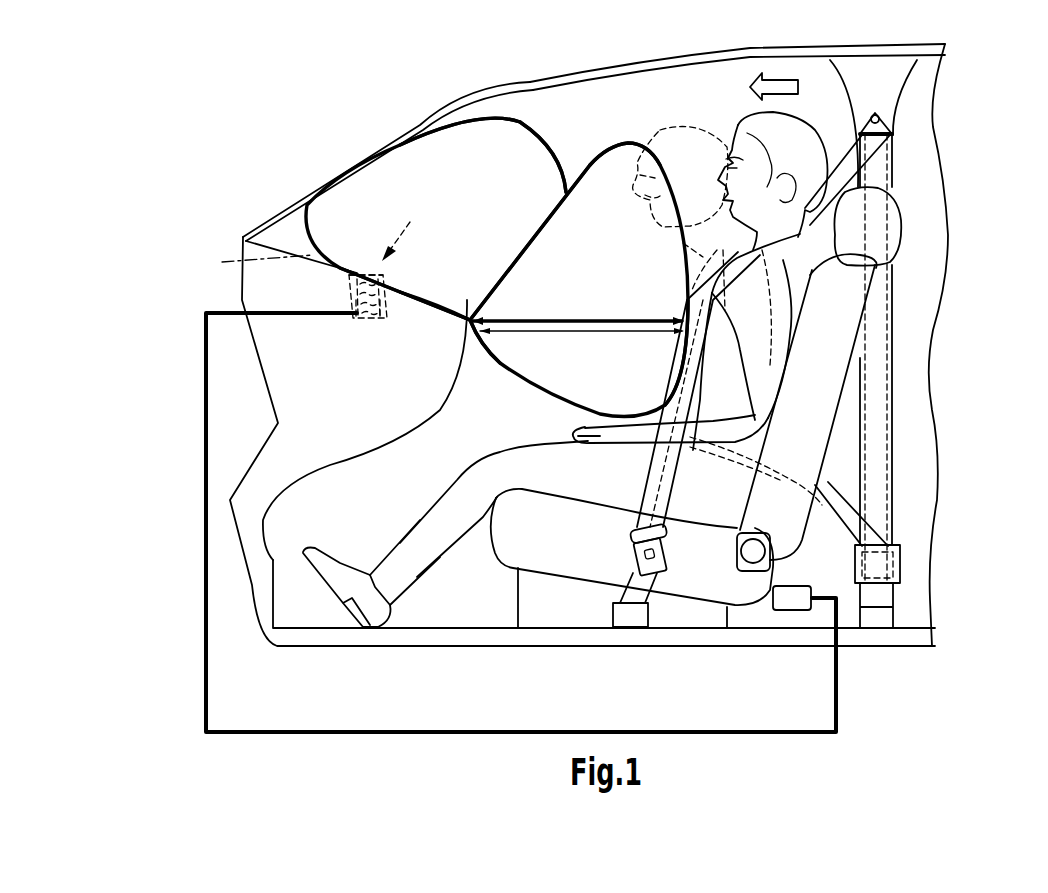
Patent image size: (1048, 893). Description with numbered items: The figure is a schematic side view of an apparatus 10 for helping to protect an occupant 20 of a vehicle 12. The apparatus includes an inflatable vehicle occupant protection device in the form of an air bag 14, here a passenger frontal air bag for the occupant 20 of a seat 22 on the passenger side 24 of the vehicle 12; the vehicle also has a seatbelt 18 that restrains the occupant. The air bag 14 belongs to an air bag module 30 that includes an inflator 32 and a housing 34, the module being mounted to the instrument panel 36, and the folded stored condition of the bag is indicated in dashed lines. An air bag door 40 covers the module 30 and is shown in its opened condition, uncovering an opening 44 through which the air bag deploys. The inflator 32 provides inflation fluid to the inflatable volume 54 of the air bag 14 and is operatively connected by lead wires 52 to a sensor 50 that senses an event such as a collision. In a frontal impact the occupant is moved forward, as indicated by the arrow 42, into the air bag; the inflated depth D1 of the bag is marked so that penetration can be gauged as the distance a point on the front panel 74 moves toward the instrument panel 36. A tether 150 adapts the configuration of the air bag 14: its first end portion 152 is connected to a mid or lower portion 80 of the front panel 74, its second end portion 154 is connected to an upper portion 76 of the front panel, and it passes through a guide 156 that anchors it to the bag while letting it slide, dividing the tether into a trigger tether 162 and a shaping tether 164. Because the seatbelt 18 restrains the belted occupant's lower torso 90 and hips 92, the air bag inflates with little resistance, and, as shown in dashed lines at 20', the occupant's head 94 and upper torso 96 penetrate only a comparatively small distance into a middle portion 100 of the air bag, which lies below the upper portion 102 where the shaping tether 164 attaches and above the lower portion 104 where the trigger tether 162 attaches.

The apparatus 10 is at (268, 172).
The vehicle 12 is at (276, 115).
The air bag 14 is at (377, 293).
The seatbelt 18 is at (657, 507).
The occupant 20 is at (551, 324).
The belted occupant in penetrating position 20' is at (680, 124).
The seat 22 is at (830, 345).
The passenger side 24 is at (606, 95).
The air bag module 30 is at (330, 287).
The inflator 32 is at (365, 313).
The housing 34 is at (375, 313).
The instrument panel 36 is at (415, 405).
The air bag door 40 is at (255, 260).
The arrow 42 is at (772, 87).
The opening 44 is at (403, 231).
The sensor 50 is at (793, 593).
The lead wires 52 is at (838, 683).
The inflatable volume 54 is at (487, 220).
The front panel 74 is at (690, 293).
The upper portion of the front panel 76 is at (583, 163).
The mid or lower portion of the front panel 80 is at (753, 282).
The lower torso 90 is at (690, 362).
The hips 92 is at (707, 500).
The head 94 is at (805, 152).
The upper torso 96 is at (735, 316).
The middle portion of the air bag 100 is at (667, 272).
The upper portion of the air bag 102 is at (543, 163).
The lower portion of the air bag 104 is at (707, 393).
The tether 150 is at (483, 307).
The first end portion 152 is at (670, 320).
The second end portion 154 is at (555, 203).
The guide 156 is at (477, 320).
The trigger tether 162 is at (557, 313).
The shaping tether 164 is at (507, 277).
The inflated depth D1 is at (580, 315).